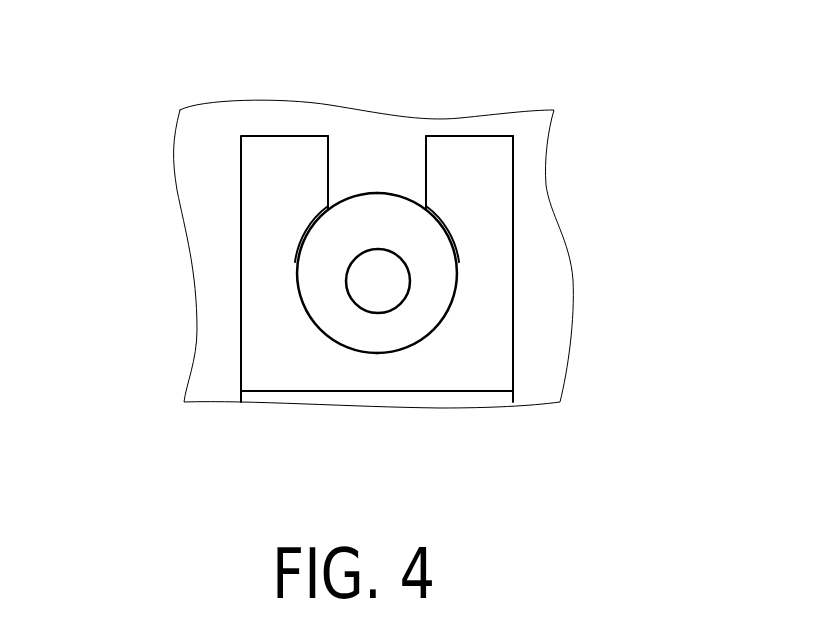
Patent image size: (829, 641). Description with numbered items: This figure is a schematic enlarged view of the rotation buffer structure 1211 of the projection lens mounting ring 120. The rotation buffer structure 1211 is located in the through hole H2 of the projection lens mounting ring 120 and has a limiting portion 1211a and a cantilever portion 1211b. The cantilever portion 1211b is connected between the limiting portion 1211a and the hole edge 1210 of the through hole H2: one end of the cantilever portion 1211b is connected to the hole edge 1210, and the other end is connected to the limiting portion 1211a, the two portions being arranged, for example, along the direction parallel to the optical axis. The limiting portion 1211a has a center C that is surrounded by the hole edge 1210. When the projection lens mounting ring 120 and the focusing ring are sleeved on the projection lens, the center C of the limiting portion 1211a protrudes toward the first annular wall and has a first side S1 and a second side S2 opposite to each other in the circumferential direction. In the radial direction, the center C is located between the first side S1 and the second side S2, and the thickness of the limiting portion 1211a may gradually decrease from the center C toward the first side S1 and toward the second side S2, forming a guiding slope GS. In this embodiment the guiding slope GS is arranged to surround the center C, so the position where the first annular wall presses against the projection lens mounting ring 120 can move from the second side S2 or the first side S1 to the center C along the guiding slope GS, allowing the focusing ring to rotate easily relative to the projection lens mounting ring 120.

The projection lens mounting ring 120 is at (140, 53).
The hole edge 1210 is at (270, 137).
The rotation buffer structure 1211 is at (692, 143).
The limiting portion 1211a is at (432, 233).
The cantilever portion 1211b is at (392, 162).
The guiding slope GS is at (372, 220).
The through hole H2 is at (513, 283).
The first side S1 is at (330, 295).
The second side S2 is at (423, 295).
The center C is at (377, 292).